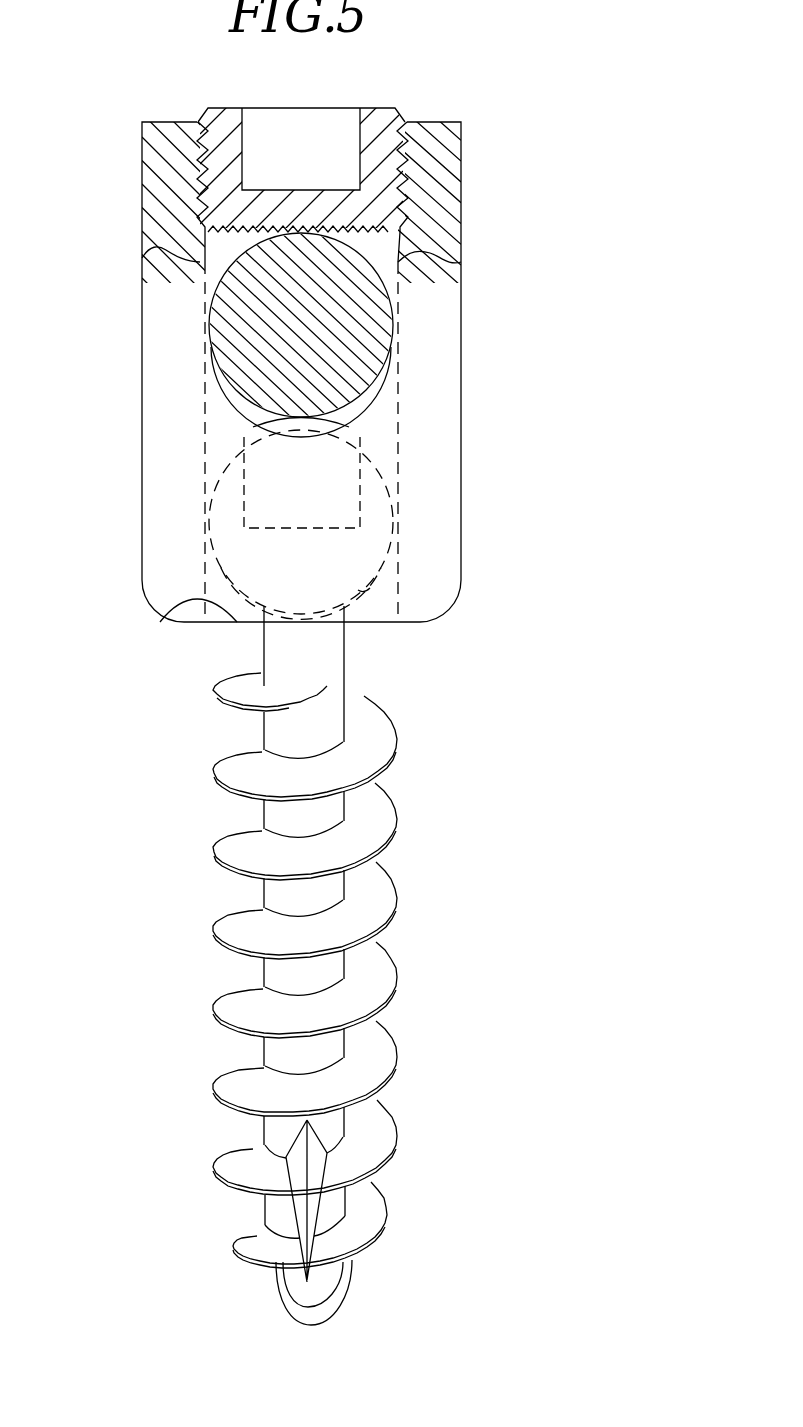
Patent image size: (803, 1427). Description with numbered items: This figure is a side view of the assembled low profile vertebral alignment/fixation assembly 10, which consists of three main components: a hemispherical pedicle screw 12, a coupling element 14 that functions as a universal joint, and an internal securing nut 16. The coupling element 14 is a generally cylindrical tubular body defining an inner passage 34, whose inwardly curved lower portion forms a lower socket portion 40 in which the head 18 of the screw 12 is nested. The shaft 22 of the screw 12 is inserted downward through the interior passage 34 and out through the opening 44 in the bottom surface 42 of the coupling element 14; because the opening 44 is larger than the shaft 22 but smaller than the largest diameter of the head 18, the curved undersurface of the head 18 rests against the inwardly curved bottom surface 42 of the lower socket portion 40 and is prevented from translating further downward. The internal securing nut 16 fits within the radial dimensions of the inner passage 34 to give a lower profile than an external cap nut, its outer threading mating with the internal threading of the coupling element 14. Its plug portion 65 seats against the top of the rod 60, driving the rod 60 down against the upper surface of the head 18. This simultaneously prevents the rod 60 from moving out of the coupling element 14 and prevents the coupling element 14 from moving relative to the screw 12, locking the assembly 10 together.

The vertebral alignment/fixation assembly 10 is at (572, 78).
The pedicle screw 12 is at (225, 965).
The coupling element 14 is at (176, 540).
The internal securing nut 16 is at (315, 217).
The head 18 is at (380, 516).
The shaft 22 is at (272, 812).
The inner passage 34 is at (247, 418).
The lower socket portion 40 is at (393, 545).
The bottom surface 42 is at (365, 590).
The opening 44 is at (188, 600).
The rod 60 is at (378, 338).
The plug portion 65 is at (310, 211).